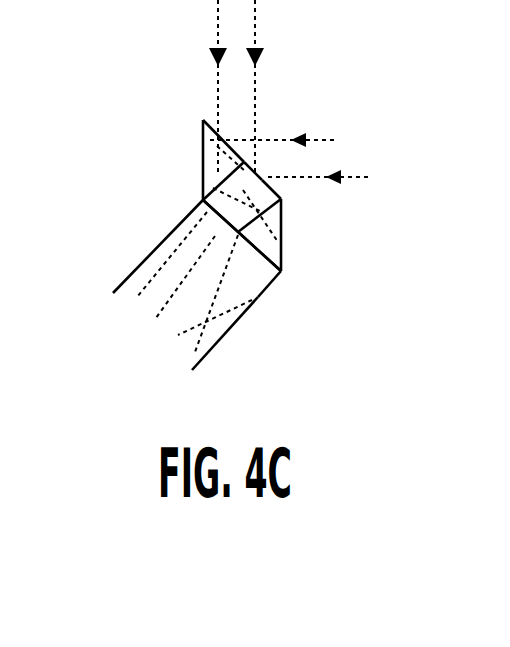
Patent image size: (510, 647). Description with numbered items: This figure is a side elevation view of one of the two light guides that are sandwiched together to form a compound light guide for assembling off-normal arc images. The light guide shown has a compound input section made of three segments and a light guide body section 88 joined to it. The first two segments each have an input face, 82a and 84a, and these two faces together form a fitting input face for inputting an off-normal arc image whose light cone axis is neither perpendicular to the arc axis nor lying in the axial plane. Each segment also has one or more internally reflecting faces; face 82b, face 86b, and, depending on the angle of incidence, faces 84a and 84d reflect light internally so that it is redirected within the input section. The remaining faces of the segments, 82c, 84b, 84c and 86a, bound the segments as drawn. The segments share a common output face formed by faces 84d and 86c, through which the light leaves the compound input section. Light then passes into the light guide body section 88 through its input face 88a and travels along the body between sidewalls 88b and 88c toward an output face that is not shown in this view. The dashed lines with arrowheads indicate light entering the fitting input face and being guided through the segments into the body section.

The input face 82a is at (204, 120).
The internally reflecting face 82b is at (203, 152).
The face of input segment 82c is at (205, 182).
The input face 84a is at (259, 173).
The face of input segment 84b is at (281, 208).
The face of input segment 84c is at (247, 163).
The internally reflecting face / output face 84d is at (282, 199).
The face of input segment 86a is at (283, 216).
The internally reflecting face 86b is at (283, 252).
The common output face 86c is at (283, 256).
The light guide body section 88 is at (158, 325).
The input face 88a is at (252, 245).
The sidewall 88b is at (219, 341).
The sidewall 88c is at (133, 270).